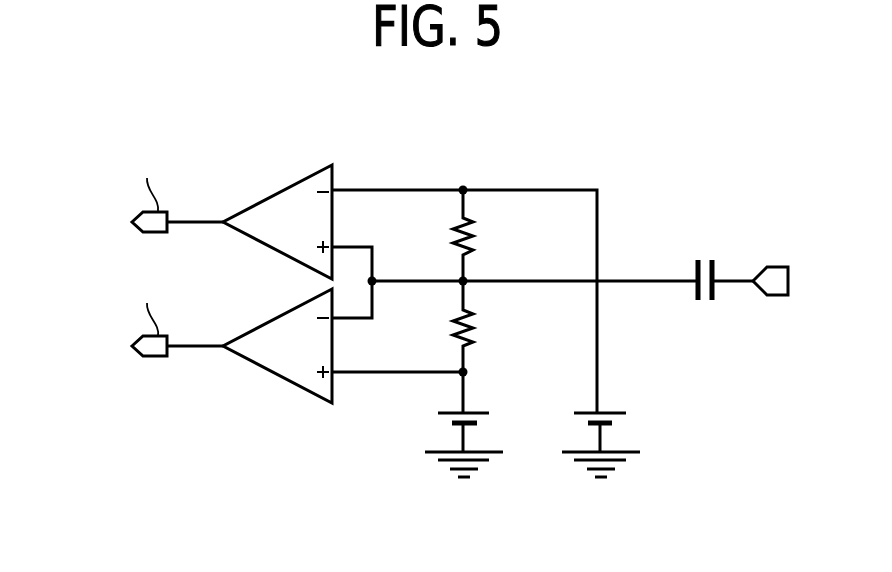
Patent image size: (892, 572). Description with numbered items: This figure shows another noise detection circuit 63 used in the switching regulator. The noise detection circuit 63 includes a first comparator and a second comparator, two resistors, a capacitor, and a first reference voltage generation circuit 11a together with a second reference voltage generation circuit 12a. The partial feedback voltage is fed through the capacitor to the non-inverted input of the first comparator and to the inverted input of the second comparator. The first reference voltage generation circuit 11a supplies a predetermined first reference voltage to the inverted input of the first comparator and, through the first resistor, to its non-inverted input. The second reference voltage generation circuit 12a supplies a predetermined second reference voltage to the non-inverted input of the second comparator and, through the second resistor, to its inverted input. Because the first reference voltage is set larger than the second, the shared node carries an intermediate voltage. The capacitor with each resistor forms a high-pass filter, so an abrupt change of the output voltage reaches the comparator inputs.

The noise detection circuit 63 is at (583, 141).
The second reference voltage generation circuit 12a is at (492, 421).
The first reference voltage generation circuit 11a is at (627, 421).